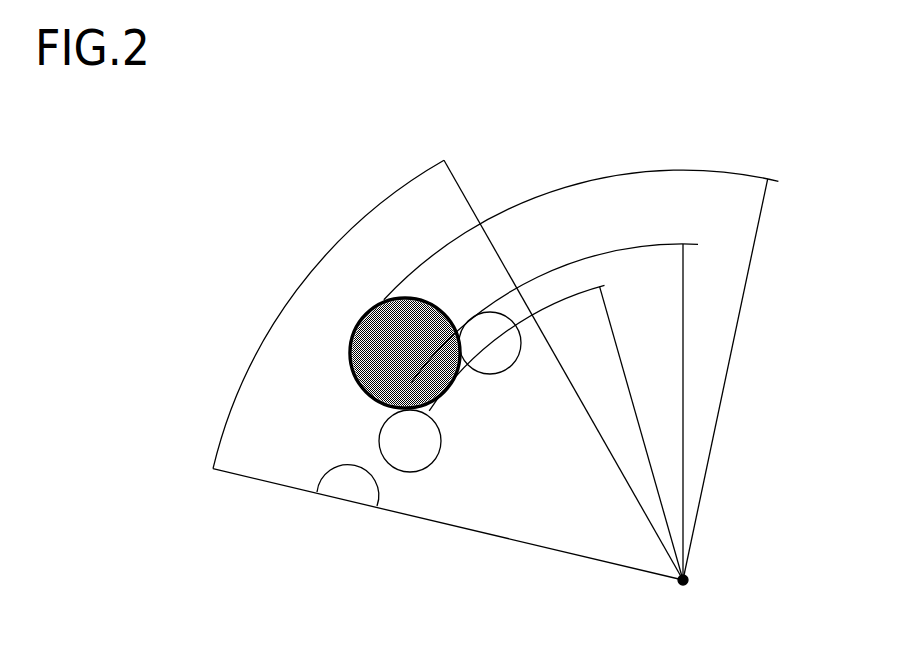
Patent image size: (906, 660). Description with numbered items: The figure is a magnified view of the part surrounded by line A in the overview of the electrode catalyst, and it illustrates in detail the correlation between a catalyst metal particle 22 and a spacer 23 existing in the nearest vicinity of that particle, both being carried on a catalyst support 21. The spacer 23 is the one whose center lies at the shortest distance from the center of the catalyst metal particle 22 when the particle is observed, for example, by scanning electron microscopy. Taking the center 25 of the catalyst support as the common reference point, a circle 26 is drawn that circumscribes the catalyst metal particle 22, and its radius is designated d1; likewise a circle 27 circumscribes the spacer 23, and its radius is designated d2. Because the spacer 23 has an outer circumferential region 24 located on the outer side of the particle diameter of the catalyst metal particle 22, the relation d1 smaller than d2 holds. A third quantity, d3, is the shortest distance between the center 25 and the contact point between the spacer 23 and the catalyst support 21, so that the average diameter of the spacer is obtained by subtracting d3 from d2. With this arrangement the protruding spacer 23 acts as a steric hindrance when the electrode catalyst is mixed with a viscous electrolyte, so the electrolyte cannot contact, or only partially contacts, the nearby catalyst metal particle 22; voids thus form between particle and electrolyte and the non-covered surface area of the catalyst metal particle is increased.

The catalyst support 21 is at (496, 538).
The catalyst metal particle 22 is at (410, 487).
The spacer 23 is at (368, 393).
The outer circumferential region 24 is at (376, 354).
The center of the catalyst support 25 is at (700, 588).
The circle circumscribing the catalyst metal particle 26 is at (340, 471).
The circle circumscribing the spacer 27 is at (361, 353).
The line A is at (448, 370).
The radius of the circle circumscribing the catalyst metal particle d1 is at (554, 412).
The radius of the circle circumscribing the spacer d2 is at (581, 375).
The shortest distance to the spacer contact point d3 is at (556, 432).